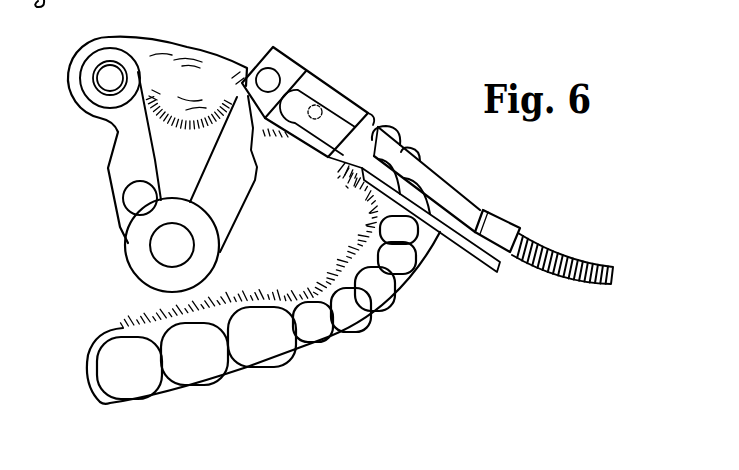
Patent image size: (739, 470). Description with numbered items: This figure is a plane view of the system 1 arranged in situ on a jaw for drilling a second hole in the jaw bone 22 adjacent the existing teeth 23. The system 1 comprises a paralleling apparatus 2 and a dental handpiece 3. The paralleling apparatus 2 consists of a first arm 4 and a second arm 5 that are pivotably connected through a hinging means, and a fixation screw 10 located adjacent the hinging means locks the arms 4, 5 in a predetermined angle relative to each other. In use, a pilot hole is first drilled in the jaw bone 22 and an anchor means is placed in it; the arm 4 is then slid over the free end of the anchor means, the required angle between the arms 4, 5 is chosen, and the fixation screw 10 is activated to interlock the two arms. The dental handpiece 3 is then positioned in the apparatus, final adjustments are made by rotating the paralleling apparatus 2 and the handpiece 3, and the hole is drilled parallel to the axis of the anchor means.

The system 1 is at (93, 218).
The paralleling apparatus 2 is at (217, 262).
The dental handpiece 3 is at (370, 88).
The first arm 4 is at (110, 170).
The second arm 5 is at (245, 200).
The fixation screw 10 is at (127, 212).
The jaw bone 22 is at (188, 47).
The teeth 23 is at (280, 365).